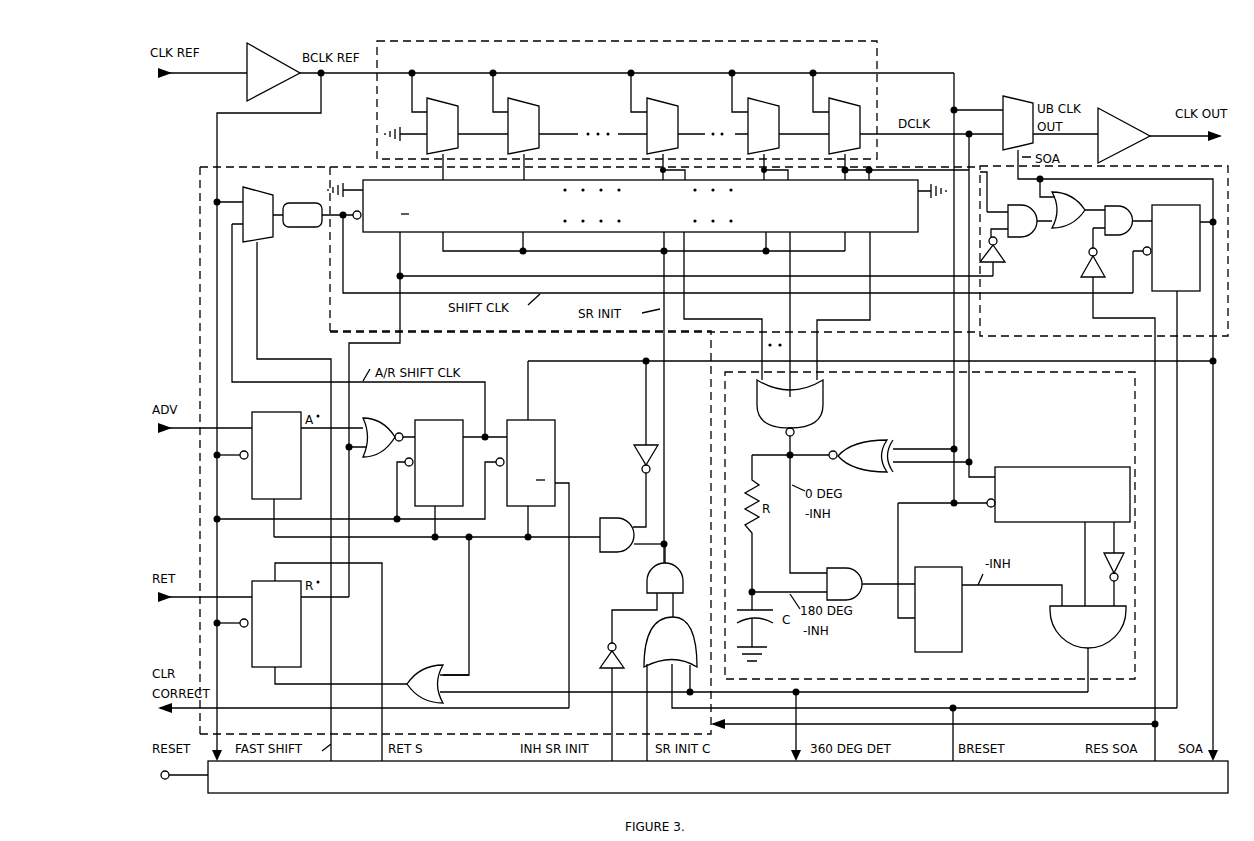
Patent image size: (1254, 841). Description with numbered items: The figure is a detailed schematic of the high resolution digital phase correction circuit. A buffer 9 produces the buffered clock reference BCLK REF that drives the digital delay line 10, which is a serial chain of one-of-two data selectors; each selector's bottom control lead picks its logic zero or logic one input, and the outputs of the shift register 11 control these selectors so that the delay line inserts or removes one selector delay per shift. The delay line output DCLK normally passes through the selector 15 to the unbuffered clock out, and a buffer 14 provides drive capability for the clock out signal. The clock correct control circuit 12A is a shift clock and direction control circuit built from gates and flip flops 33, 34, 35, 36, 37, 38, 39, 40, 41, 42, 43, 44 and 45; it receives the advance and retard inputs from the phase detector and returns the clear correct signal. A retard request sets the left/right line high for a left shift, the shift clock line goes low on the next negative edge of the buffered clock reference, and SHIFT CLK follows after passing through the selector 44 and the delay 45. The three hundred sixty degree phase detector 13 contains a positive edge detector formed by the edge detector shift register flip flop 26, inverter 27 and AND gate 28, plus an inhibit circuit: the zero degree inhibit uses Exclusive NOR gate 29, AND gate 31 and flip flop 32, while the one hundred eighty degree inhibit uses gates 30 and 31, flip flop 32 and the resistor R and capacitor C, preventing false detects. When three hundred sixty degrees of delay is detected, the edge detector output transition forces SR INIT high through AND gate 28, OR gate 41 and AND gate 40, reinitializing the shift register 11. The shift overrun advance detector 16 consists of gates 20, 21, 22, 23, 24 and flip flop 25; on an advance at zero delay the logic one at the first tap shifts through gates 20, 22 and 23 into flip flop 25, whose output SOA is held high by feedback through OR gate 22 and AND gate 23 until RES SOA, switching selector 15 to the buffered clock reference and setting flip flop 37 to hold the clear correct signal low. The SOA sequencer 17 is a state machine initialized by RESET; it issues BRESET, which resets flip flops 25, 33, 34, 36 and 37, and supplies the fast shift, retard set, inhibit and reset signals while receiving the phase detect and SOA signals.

The buffer 9 is at (272, 57).
The digital delay line 10 is at (690, 110).
The shift register 11 is at (373, 180).
The clock correct control circuit 12A is at (455, 532).
The 360 degree phase detector 13 is at (930, 525).
The buffer 14 is at (1110, 110).
The selector 15 is at (1016, 95).
The shift overrun advance detector 16 is at (1104, 251).
The SOA sequencer 17 is at (718, 777).
The AND gate 20 is at (1016, 204).
The inverter 21 is at (1002, 256).
The OR gate 22 is at (1072, 211).
The AND gate 23 is at (1122, 210).
The inverter 24 is at (1108, 494).
The flip flop 25 is at (1173, 446).
The flip flop 26 is at (1058, 526).
The inverter 27 is at (1123, 579).
The AND gate 28 is at (1074, 649).
The Exclusive NOR gate 29 is at (801, 476).
The gate 30 is at (899, 447).
The AND gate 31 is at (871, 574).
The flip flop 32 is at (988, 599).
The flip flop 33 is at (290, 465).
The flip flop 34 is at (312, 661).
The gate 35 is at (382, 428).
The flip flop 36 is at (456, 469).
The flip flop 37 is at (532, 534).
The inverter 38 is at (634, 444).
The AND gate 39 is at (632, 525).
The AND gate 40 is at (647, 592).
The OR gate 41 is at (910, 685).
The inverter 42 is at (602, 702).
The OR gate 43 is at (747, 675).
The selector 44 is at (274, 465).
The delay 45 is at (313, 219).